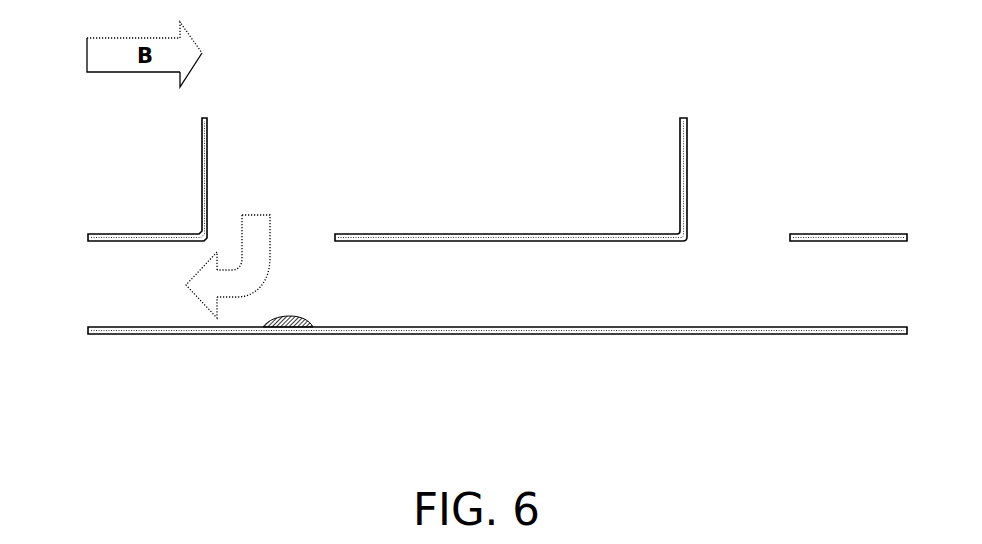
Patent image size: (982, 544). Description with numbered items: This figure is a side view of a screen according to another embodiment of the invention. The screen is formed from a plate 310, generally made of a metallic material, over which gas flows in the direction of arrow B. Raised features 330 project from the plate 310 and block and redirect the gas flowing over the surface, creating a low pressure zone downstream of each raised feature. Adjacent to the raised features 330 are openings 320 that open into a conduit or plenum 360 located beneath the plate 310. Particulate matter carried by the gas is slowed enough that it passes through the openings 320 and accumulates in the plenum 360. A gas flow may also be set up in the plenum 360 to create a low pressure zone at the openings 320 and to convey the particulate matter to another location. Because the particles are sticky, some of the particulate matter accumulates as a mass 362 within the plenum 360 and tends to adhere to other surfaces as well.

The plate 310 is at (513, 333).
The openings 320 is at (283, 242).
The raised features 330 is at (195, 187).
The plenum 360 is at (536, 302).
The mass 362 is at (300, 322).